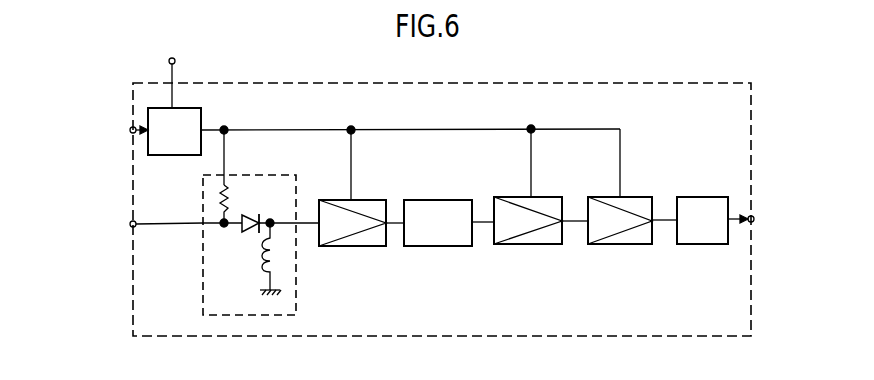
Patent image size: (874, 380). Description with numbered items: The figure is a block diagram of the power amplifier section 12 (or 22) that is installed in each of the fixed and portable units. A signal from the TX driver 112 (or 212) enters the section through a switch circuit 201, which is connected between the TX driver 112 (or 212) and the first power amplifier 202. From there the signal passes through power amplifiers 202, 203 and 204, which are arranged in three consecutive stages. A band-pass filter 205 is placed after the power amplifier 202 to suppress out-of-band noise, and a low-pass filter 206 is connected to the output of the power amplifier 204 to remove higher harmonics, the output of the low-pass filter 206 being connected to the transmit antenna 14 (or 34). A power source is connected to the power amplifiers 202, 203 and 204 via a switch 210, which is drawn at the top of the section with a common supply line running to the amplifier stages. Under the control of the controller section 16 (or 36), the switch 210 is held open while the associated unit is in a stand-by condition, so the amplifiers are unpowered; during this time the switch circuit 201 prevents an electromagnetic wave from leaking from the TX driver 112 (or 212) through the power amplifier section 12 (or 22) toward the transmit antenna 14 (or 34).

The power amplifier section 12 is at (442, 225).
The power amplifier section 22 is at (637, 338).
The switch 210 is at (203, 113).
The controller section 16 is at (98, 133).
The controller section 36 is at (98, 133).
The TX driver 112 is at (123, 232).
The TX driver 212 is at (123, 232).
The switch circuit 201 is at (203, 265).
The power amplifier 202 is at (345, 248).
The band-pass filter 205 is at (425, 248).
The power amplifier 203 is at (522, 246).
The power amplifier 204 is at (614, 246).
The low-pass filter 206 is at (690, 246).
The transmit antenna 14 is at (773, 228).
The transmit antenna 34 is at (773, 228).